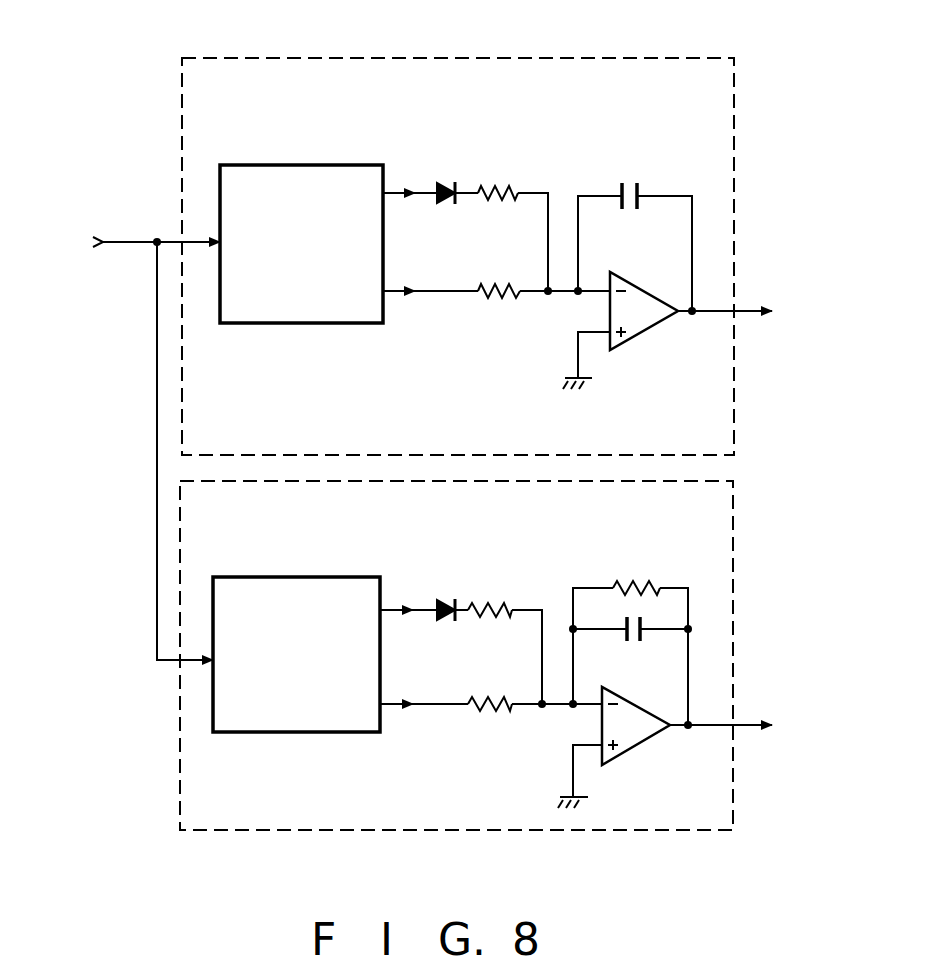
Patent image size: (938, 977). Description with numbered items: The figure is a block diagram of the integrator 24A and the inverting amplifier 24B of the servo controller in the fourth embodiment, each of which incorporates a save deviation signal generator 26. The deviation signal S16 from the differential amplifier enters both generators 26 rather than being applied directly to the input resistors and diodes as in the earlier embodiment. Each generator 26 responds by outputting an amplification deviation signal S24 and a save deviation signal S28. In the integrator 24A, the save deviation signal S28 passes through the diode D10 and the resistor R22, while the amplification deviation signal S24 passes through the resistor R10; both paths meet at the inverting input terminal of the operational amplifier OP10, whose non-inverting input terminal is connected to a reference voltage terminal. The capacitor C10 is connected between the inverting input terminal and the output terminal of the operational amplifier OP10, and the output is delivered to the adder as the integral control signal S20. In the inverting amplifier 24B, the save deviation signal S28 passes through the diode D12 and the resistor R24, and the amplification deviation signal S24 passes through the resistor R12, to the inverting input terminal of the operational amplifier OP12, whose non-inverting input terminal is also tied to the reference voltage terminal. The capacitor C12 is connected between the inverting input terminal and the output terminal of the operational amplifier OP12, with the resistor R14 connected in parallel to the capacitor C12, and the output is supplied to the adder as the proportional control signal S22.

The integrator 24A is at (592, 58).
The inverting amplifier 24B is at (583, 832).
The save deviation signal generator 26 is at (316, 165).
The deviation signal S16 is at (82, 239).
The save deviation signal S28 is at (398, 193).
The amplification deviation signal S24 is at (388, 766).
The integral control signal S20 is at (778, 311).
The proportional control signal S22 is at (778, 725).
The diode D10 is at (445, 185).
The diode D12 is at (442, 602).
The resistor R22 is at (506, 185).
The resistor R10 is at (504, 287).
The resistor R24 is at (505, 603).
The resistor R12 is at (487, 698).
The resistor R14 is at (624, 582).
The capacitor C10 is at (629, 183).
The capacitor C12 is at (636, 645).
The operational amplifier OP10 is at (646, 338).
The operational amplifier OP12 is at (634, 748).